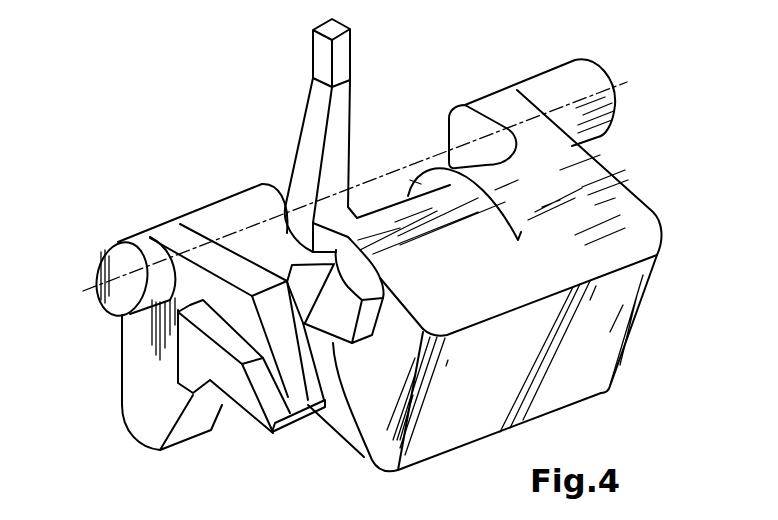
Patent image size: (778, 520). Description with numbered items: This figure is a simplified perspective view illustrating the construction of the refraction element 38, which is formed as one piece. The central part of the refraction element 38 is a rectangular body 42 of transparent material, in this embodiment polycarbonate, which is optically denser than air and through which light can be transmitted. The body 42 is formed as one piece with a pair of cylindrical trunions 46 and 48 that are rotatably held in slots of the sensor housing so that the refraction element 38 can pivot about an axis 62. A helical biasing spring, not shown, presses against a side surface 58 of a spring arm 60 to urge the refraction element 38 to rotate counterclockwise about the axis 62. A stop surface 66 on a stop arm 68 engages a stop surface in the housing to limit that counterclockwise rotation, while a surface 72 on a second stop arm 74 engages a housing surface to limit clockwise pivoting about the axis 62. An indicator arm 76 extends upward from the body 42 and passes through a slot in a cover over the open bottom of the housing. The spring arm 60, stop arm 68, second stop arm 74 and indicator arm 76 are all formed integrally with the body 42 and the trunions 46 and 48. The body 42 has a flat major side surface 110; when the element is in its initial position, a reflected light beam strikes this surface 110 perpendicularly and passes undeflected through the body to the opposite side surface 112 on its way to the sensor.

The refraction element 38 is at (653, 217).
The rectangular body 42 is at (578, 222).
The cylindrical trunion 46 is at (553, 67).
The cylindrical trunion 48 is at (118, 242).
The side surface 58 is at (248, 423).
The spring arm 60 is at (308, 410).
The axis 62 is at (419, 163).
The stop surface 66 is at (190, 423).
The stop arm 68 is at (153, 397).
The surface 72 is at (373, 452).
The second stop arm 74 is at (373, 290).
The indicator arm 76 is at (307, 131).
The flat major side surface 110 is at (521, 237).
The opposite side surface 112 is at (557, 383).